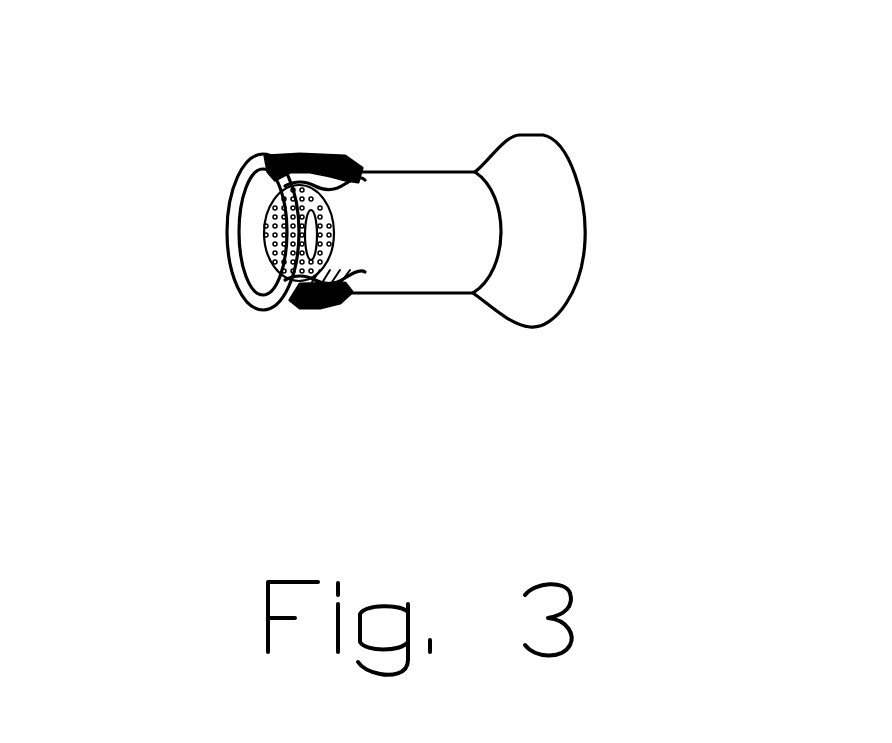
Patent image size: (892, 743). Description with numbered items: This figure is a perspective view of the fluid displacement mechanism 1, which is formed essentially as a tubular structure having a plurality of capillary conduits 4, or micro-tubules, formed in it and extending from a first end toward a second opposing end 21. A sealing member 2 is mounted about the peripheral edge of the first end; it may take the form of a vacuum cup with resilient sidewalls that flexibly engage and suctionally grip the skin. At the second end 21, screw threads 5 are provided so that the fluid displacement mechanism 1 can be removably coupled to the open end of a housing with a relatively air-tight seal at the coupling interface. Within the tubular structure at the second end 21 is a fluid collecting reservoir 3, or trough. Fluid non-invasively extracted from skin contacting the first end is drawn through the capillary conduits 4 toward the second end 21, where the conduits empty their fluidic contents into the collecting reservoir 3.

The fluid displacement mechanism 1 is at (395, 265).
The sealing member 2 is at (548, 262).
The fluid collecting reservoir 3 is at (283, 268).
The capillary conduits 4 is at (275, 192).
The screw threads 5 is at (295, 158).
The second end 21 is at (315, 322).